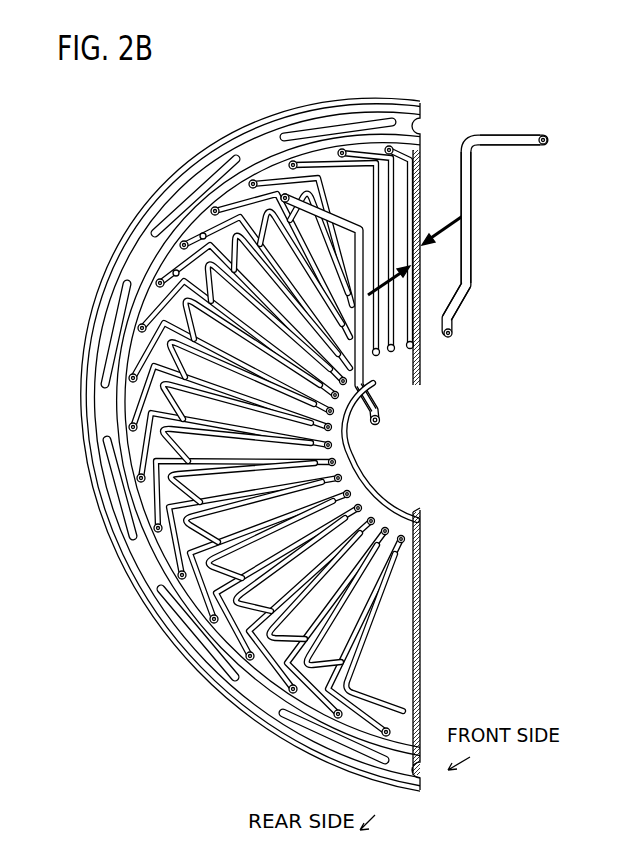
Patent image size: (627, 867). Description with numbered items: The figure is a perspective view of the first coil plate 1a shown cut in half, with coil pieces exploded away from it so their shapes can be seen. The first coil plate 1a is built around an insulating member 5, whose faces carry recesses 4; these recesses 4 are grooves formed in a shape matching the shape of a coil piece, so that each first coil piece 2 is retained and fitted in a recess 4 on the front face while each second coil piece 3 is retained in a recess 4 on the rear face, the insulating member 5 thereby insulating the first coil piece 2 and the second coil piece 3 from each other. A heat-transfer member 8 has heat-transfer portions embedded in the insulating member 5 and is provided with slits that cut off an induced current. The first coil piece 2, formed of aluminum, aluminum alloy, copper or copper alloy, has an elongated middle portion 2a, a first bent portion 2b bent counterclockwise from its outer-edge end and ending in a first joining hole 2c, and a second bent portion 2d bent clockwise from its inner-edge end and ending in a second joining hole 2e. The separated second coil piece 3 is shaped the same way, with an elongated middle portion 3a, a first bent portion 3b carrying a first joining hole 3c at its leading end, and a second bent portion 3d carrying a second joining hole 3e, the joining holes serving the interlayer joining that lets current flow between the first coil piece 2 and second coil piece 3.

The first coil plate 1a is at (470, 74).
The first coil piece 2 is at (411, 421).
The middle portion 2a is at (330, 309).
The first bent portion 2b is at (322, 178).
The first joining hole 2c is at (283, 172).
The second bent portion 2d is at (366, 398).
The second joining hole 2e is at (378, 428).
The second coil piece 3 is at (491, 253).
The middle portion 3a is at (477, 194).
The first bent portion 3b is at (512, 136).
The first joining hole 3c is at (548, 139).
The second bent portion 3d is at (465, 308).
The second joining hole 3e is at (458, 335).
The recess 4 is at (174, 270).
The insulating member 5 is at (142, 345).
The heat-transfer member 8 is at (313, 103).